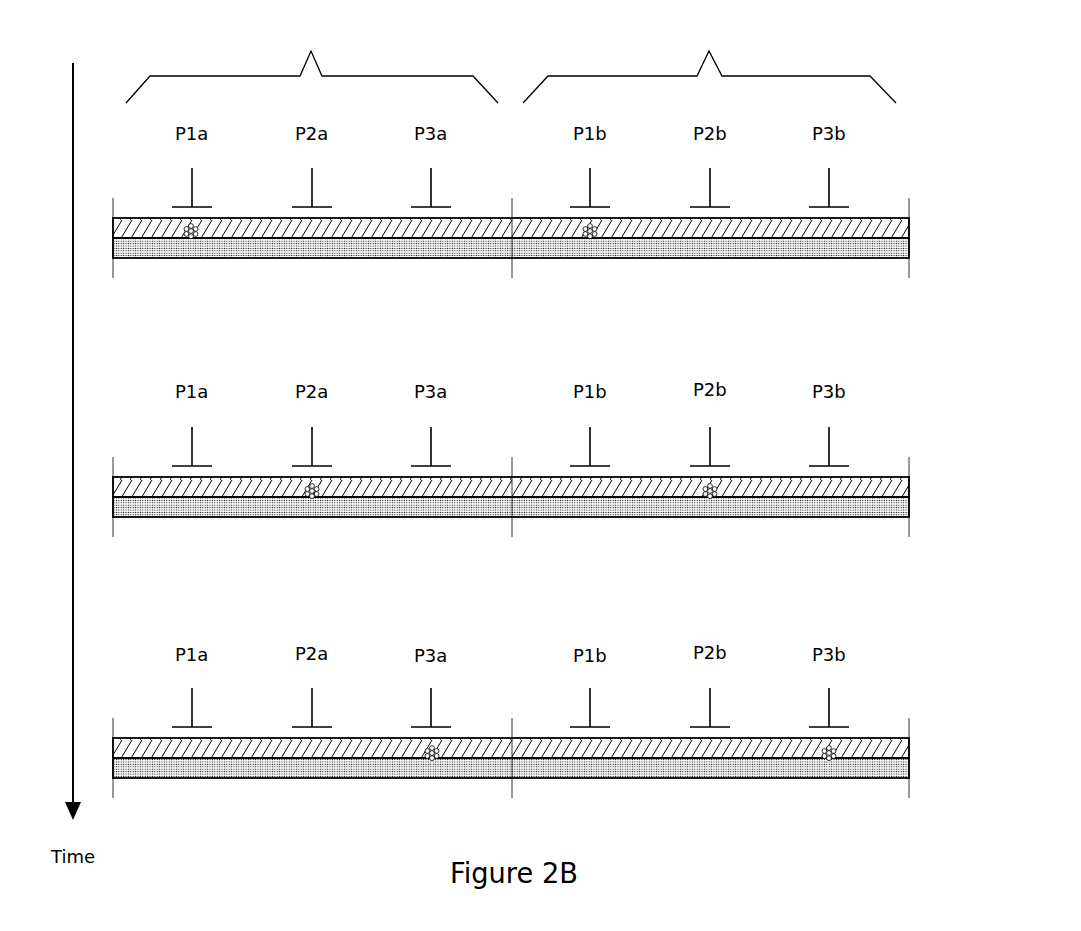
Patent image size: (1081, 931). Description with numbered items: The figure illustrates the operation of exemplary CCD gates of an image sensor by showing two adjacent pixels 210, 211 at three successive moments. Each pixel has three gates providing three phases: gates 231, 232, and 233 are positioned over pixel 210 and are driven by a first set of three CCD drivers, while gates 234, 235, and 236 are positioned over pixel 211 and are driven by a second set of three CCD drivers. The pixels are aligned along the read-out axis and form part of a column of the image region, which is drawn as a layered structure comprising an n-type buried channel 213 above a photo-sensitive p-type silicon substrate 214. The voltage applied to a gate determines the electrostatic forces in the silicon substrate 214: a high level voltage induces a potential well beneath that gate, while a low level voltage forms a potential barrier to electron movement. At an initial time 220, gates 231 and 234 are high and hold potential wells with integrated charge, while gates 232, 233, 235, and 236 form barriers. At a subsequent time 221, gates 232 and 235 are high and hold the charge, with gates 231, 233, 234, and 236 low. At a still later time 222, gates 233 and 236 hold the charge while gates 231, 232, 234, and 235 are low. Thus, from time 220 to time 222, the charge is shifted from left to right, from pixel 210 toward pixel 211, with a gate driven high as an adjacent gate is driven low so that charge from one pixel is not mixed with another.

The pixel 210 is at (312, 58).
The pixel 211 is at (709, 58).
The n-type buried channel 213 is at (909, 219).
The photo-sensitive p-type silicon substrate 214 is at (909, 250).
The time 220 is at (580, 235).
The time 221 is at (586, 497).
The time 222 is at (580, 758).
The gate 231 is at (210, 447).
The gate 232 is at (330, 447).
The gate 233 is at (450, 447).
The gate 234 is at (608, 447).
The gate 235 is at (729, 447).
The gate 236 is at (848, 447).